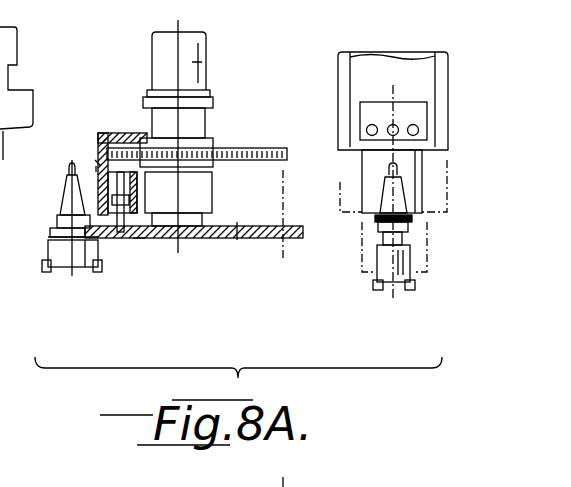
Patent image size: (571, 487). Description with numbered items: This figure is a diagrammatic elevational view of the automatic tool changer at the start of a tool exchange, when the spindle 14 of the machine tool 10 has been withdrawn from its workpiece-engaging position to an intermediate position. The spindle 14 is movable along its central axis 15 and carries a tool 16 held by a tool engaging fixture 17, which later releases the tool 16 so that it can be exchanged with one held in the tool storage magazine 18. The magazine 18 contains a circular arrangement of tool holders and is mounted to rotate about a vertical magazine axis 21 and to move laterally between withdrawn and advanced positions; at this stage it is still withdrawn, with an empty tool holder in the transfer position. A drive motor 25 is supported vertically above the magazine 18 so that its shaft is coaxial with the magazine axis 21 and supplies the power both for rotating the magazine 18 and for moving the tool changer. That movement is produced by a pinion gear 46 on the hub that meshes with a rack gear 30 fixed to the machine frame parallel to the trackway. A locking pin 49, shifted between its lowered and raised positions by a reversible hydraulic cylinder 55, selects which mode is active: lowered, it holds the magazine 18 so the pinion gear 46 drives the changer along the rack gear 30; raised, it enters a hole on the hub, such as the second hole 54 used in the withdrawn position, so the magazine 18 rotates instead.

The machine tool 10 is at (383, 56).
The spindle 14 is at (362, 170).
The central axis 15 is at (390, 118).
The tool 16 is at (386, 268).
The tool engaging fixture 17 is at (383, 201).
The tool storage magazine 18 is at (220, 239).
The magazine axis 21 is at (180, 238).
The drive motor 25 is at (202, 62).
The rack gear 30 is at (266, 148).
The pinion gear 46 is at (135, 133).
The locking pin 49 is at (140, 238).
The second hole 54 is at (100, 133).
The reversible hydraulic cylinder 55 is at (96, 164).